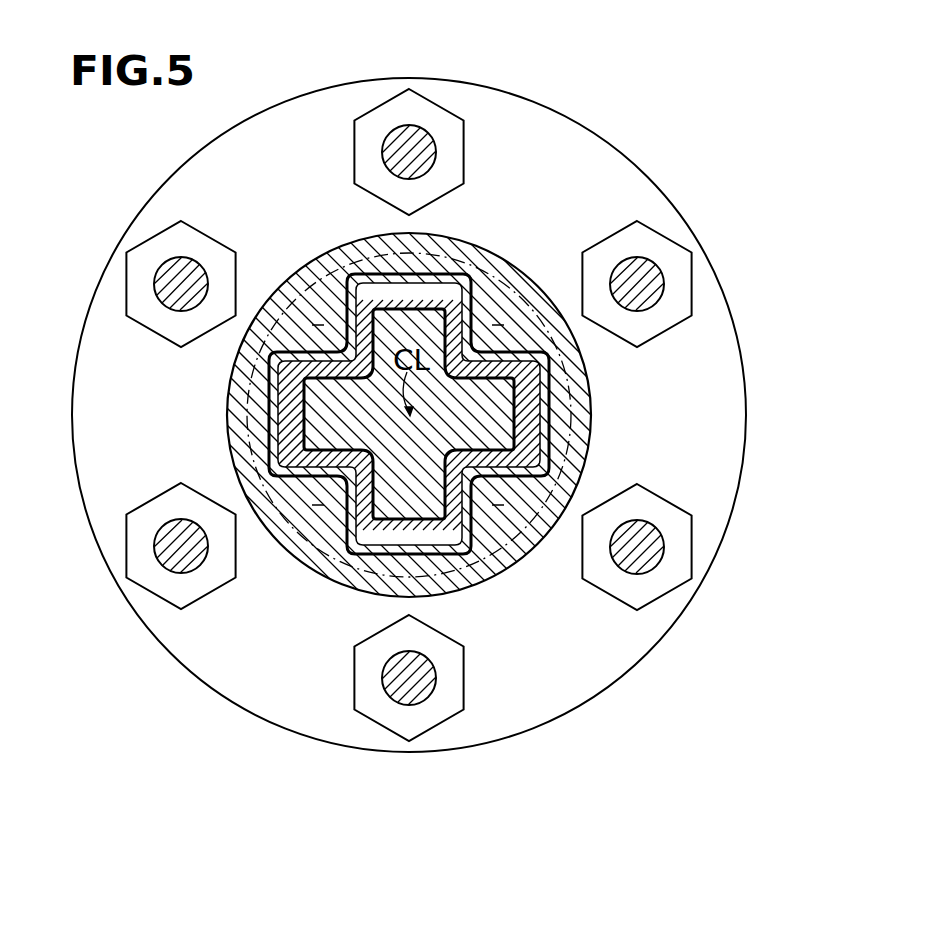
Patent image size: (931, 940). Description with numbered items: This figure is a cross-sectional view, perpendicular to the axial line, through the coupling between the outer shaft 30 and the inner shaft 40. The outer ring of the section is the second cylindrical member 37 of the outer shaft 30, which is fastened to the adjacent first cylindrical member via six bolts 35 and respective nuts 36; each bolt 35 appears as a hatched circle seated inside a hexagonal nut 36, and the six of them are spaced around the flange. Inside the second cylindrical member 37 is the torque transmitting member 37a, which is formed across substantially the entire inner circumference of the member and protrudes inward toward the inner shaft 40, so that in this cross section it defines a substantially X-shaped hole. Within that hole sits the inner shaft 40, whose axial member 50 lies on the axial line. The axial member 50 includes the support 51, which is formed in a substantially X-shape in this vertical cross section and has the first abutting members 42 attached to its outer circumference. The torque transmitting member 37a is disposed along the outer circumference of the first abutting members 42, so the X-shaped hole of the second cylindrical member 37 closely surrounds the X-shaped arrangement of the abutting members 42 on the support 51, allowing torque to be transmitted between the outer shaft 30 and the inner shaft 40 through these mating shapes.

The outer shaft 30 is at (557, 103).
The bolts 35 is at (386, 133).
The nuts 36 is at (438, 106).
The second cylindrical member 37 is at (594, 156).
The torque transmitting member 37a is at (318, 325).
The first abutting members 42 is at (545, 393).
The axial member 50 is at (422, 415).
The inner shaft 40 is at (422, 415).
The support 51 is at (337, 417).